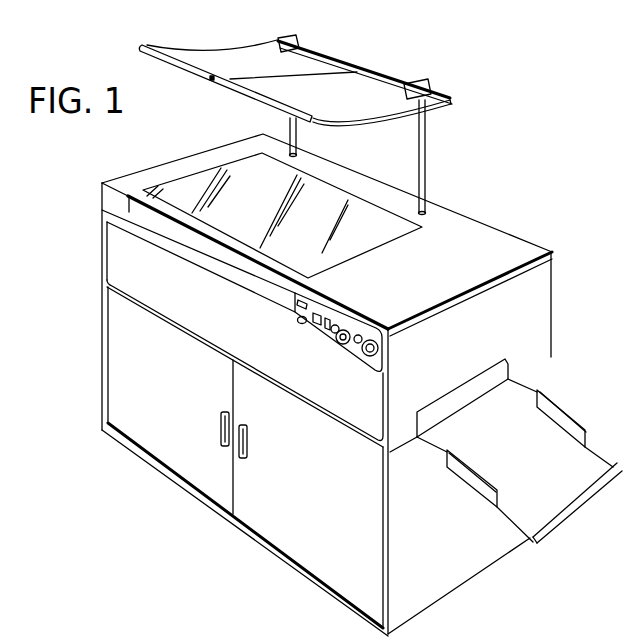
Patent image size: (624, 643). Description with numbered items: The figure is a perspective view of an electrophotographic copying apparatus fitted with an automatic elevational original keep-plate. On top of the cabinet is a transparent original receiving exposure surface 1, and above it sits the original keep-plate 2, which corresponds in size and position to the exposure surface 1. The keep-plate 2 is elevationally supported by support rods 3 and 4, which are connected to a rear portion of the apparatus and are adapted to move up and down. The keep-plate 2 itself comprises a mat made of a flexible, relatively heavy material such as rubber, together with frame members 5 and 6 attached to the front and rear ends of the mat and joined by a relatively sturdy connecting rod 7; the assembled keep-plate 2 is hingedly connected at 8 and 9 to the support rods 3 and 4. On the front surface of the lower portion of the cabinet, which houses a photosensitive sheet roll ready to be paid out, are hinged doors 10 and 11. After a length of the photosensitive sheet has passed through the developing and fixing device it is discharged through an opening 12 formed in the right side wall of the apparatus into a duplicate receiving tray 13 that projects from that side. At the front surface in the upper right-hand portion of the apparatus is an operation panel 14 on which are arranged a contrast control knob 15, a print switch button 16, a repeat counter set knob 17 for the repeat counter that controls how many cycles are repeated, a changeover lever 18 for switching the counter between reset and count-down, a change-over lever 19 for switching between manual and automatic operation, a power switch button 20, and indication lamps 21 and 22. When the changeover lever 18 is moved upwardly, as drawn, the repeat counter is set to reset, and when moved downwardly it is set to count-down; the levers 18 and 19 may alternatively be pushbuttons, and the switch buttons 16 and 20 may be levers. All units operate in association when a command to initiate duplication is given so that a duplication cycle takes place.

The transparent original receiving exposure surface 1 is at (187, 180).
The original keep-plate 2 is at (357, 114).
The support rod 3 is at (424, 162).
The support rod 4 is at (297, 137).
The frame member 5 is at (238, 84).
The frame member 6 is at (384, 79).
The connecting rod 7 is at (331, 70).
The hinge connection 8 is at (421, 87).
The hinge connection 9 is at (297, 44).
The hinged door 10 is at (292, 548).
The hinged door 11 is at (185, 467).
The opening 12 is at (474, 391).
The duplicate receiving tray 13 is at (557, 433).
The operation panel 14 is at (347, 348).
The contrast control knob 15 is at (363, 355).
The print switch button 16 is at (358, 334).
The repeat counter set knob 17 is at (343, 327).
The changeover lever 18 is at (333, 314).
The change-over lever 19 is at (327, 333).
The power switch button 20 is at (312, 326).
The indication lamp 21 is at (296, 302).
The indication lamp 22 is at (296, 322).